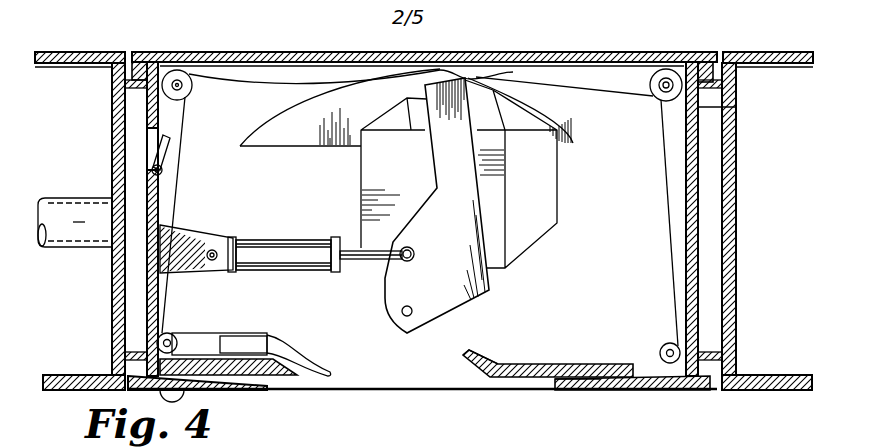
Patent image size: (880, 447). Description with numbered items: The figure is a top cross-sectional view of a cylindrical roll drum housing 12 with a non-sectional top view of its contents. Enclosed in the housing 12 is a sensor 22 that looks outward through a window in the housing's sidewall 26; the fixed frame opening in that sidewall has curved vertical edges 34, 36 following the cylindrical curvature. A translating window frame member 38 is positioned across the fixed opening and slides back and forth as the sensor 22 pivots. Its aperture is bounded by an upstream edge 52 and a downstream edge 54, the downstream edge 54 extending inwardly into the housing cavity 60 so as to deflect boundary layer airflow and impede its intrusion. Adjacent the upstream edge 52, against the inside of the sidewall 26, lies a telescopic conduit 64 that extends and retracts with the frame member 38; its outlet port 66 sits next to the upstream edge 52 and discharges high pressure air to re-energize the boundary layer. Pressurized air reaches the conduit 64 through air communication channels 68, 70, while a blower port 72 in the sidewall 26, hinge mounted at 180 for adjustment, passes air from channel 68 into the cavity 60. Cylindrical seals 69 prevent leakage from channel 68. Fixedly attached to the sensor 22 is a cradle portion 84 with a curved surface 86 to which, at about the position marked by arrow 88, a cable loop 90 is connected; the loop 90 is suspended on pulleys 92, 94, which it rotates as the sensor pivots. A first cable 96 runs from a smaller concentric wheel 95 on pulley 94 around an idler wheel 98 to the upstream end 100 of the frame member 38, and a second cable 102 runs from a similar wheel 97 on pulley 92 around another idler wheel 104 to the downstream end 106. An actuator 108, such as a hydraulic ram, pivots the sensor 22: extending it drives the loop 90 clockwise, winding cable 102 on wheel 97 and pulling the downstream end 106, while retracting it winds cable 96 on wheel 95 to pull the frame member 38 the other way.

The housing 12 is at (594, 87).
The sensor 22 is at (563, 177).
The housing sidewall 26 is at (338, 55).
The vertical edge of fixed opening 34 is at (563, 380).
The vertical edge of fixed opening 36 is at (266, 386).
The translating window frame member 38 is at (508, 359).
The upstream edge 52 is at (300, 380).
The downstream edge 54 is at (474, 372).
The housing cavity 60 is at (645, 271).
The telescopic conduit 64 is at (268, 333).
The outlet port 66 is at (330, 372).
The air communication channel 68 is at (137, 258).
The cylindrical seals 69 is at (120, 88).
The air communication channel 70 is at (75, 183).
The blower port 72 is at (168, 138).
The cradle portion 84 is at (403, 88).
The curved surface 86 is at (282, 108).
The connection position 88 is at (514, 70).
The cable loop 90 is at (655, 70).
The loop pulley 92 is at (692, 50).
The loop pulley 94 is at (174, 70).
The smaller concentric wheel 95 is at (192, 78).
The first cable 96 is at (174, 203).
The wheel 97 is at (738, 107).
The idler wheel 98 is at (172, 335).
The upstream end 100 is at (190, 387).
The second cable 102 is at (667, 200).
The idler wheel 104 is at (660, 350).
The downstream end 106 is at (636, 386).
The actuator 108 is at (283, 240).
The hinge mount 180 is at (163, 170).